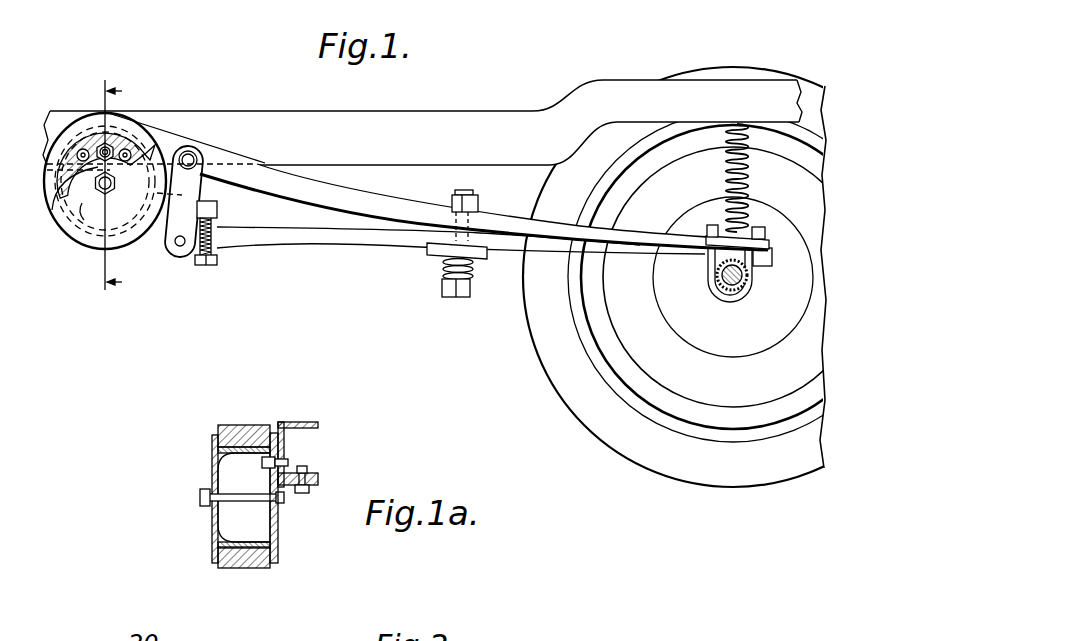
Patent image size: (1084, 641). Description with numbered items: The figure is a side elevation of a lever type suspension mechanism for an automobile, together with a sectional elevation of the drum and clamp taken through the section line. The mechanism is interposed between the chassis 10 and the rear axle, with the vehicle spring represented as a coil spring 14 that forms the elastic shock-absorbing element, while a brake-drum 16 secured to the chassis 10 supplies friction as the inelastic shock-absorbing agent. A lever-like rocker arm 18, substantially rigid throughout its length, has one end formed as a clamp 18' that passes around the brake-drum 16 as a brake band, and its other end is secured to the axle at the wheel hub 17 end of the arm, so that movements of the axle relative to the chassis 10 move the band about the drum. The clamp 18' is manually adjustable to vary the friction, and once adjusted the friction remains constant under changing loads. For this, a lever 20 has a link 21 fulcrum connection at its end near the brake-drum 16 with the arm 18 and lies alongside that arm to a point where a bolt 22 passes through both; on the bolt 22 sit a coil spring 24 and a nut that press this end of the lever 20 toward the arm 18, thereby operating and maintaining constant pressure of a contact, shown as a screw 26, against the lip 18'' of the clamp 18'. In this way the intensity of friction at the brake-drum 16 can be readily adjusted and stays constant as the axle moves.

In FIG. 1, the chassis 10 is at (644, 94).
In FIG. 1A, the chassis 10 is at (300, 425).
In FIG. 1, the coil spring 14 is at (722, 182).
In FIG. 1, the brake-drum 16 is at (97, 217).
In FIG. 1A, the brake-drum 16 is at (212, 533).
In FIG. 1, the wheel axle 17 is at (733, 292).
In FIG. 1, the rocker arm 18 is at (484, 207).
In FIG. 1, the clamp 18' is at (173, 242).
In FIG. 1A, the clamp 18' is at (263, 528).
In FIG. 1, the lip 18'' is at (251, 245).
In FIG. 1, the lever 20 is at (330, 235).
In FIG. 1, the link 21 is at (193, 180).
In FIG. 1, the bolt 22 is at (440, 240).
In FIG. 1, the coil spring 24 is at (443, 279).
In FIG. 1, the screw 26 is at (203, 265).